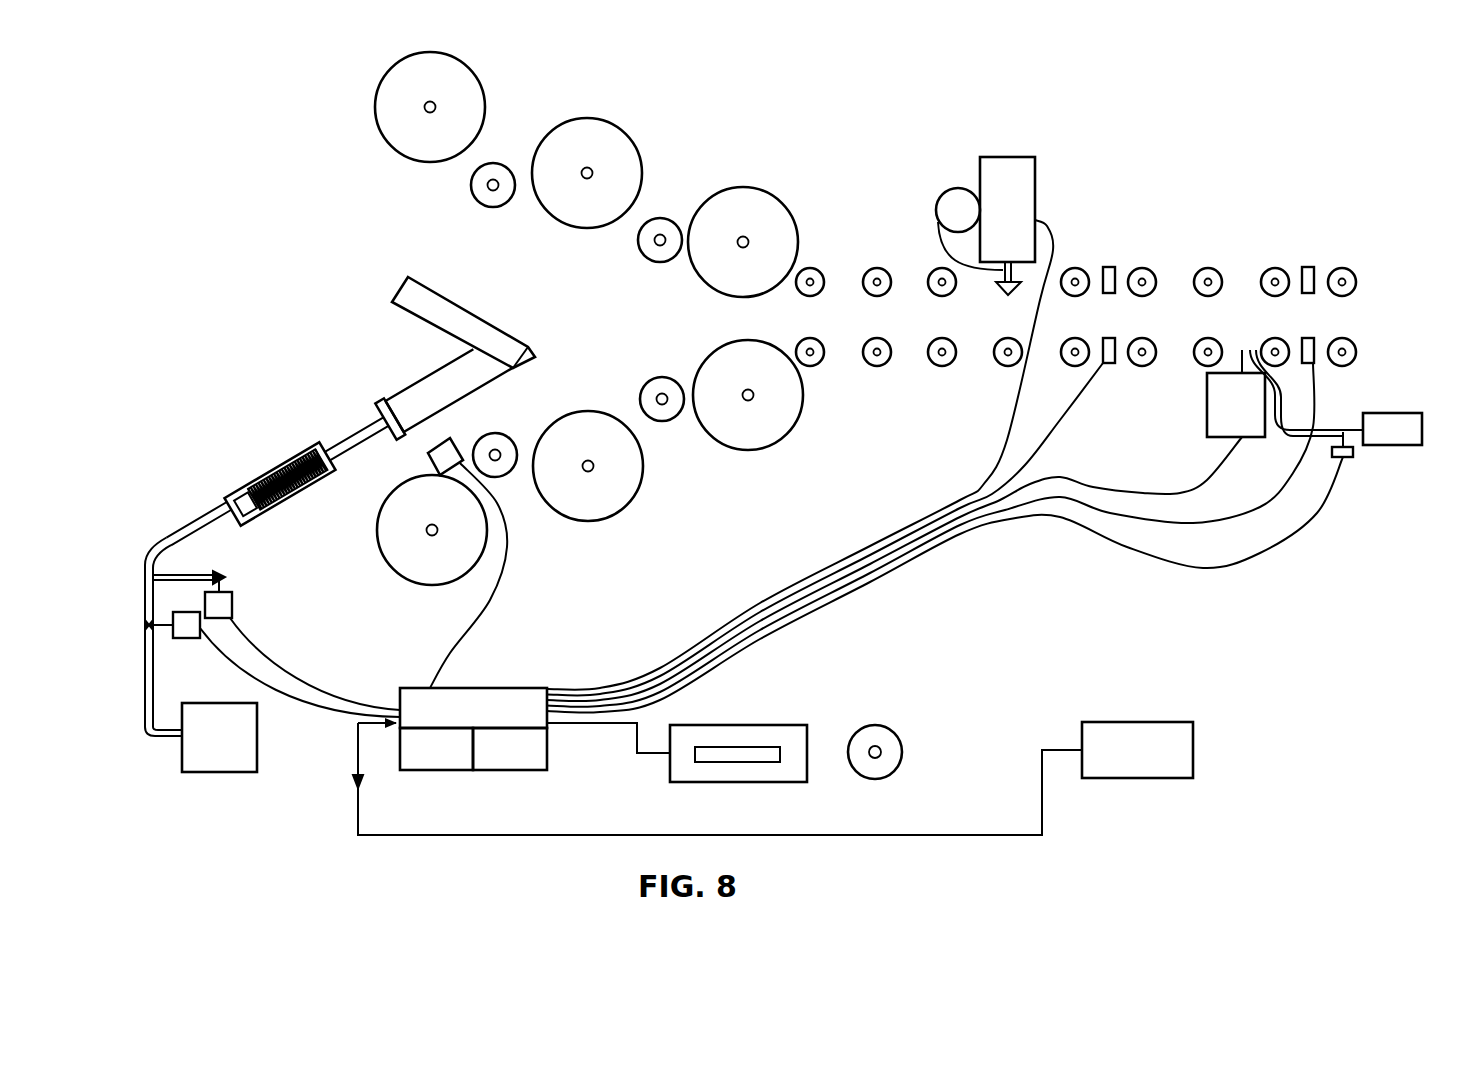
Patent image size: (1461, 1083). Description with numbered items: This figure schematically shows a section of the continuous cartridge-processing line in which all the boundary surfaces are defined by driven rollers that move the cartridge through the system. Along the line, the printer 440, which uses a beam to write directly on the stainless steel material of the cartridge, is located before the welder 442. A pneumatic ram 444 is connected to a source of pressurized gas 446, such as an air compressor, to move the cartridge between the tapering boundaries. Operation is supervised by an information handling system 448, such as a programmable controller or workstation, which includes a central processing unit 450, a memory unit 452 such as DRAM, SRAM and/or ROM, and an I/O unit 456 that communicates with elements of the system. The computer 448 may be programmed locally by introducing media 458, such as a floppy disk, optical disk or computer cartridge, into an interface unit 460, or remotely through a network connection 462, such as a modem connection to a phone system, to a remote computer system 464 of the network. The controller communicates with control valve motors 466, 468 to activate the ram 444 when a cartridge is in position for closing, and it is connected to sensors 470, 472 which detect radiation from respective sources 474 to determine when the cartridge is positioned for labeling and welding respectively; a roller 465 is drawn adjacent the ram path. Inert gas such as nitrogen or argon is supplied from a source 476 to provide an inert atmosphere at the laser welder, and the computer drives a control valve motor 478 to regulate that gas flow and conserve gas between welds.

The printer 440 is at (1029, 200).
The welder 442 is at (1257, 416).
The pneumatic ram 444 is at (320, 440).
The source of pressurized gas 446 is at (241, 748).
The information handling system 448 is at (492, 680).
The central processing unit 450 is at (532, 763).
The memory unit 452 is at (459, 763).
The I/O unit 456 is at (495, 721).
The media 458 is at (882, 727).
The interface unit 460 is at (763, 725).
The network connection 462 is at (357, 748).
The remote computer system 464 is at (442, 390).
The idler roller 465 is at (458, 445).
The control valve motor 466 is at (181, 640).
The control valve motor 468 is at (233, 602).
The sensor 470 is at (1113, 365).
The sensor 472 is at (1310, 365).
The sources 474 is at (1110, 267).
The source of inert gas 476 is at (1414, 441).
The control valve motor 478 is at (1350, 468).